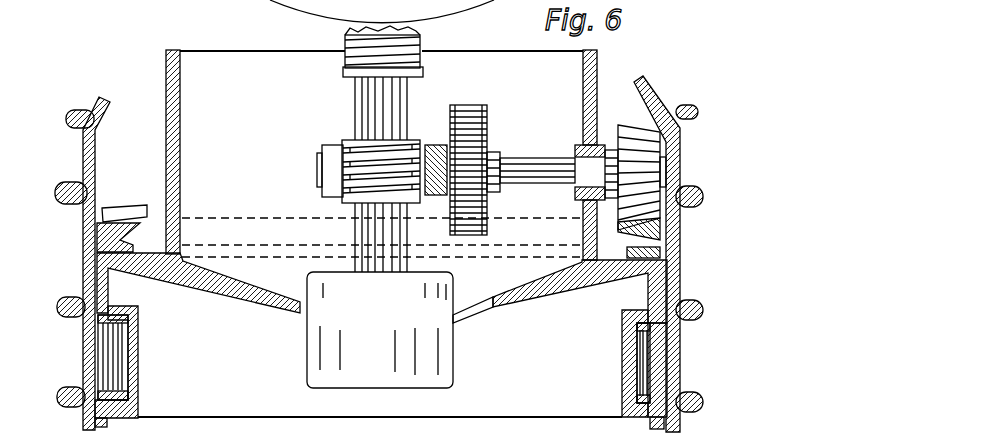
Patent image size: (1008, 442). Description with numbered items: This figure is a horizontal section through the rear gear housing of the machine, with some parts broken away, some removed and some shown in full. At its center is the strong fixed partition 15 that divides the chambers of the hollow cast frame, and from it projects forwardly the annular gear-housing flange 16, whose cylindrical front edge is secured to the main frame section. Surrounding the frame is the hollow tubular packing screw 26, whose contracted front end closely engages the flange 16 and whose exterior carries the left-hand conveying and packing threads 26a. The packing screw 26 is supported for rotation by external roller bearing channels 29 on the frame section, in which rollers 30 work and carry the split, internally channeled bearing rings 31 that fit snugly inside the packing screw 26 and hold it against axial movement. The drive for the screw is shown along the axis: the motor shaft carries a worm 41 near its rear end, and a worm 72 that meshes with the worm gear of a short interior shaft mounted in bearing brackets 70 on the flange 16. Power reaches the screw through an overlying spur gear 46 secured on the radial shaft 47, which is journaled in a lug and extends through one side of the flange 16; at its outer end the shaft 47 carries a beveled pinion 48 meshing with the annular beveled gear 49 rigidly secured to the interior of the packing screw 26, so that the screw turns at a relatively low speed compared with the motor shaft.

The fixed partition 15 is at (538, 306).
The gear-housing annular flange 16 is at (176, 121).
The packing screw 26 is at (84, 211).
The packing threads 26a is at (72, 196).
The roller bearing channels 29 is at (113, 348).
The rollers 30 is at (137, 354).
The channeled bearing rings 31 is at (128, 398).
The worm 41 is at (355, 142).
The spur gear 46 is at (477, 113).
The radial shaft 47 is at (527, 167).
The beveled pinion 48 is at (643, 138).
The annular beveled gear 49 is at (120, 208).
The bearing brackets 70 is at (437, 144).
The worm 72 is at (343, 62).